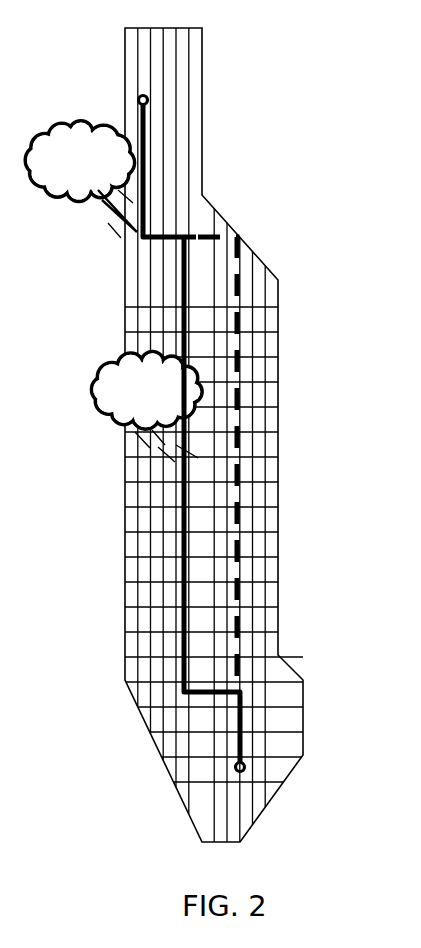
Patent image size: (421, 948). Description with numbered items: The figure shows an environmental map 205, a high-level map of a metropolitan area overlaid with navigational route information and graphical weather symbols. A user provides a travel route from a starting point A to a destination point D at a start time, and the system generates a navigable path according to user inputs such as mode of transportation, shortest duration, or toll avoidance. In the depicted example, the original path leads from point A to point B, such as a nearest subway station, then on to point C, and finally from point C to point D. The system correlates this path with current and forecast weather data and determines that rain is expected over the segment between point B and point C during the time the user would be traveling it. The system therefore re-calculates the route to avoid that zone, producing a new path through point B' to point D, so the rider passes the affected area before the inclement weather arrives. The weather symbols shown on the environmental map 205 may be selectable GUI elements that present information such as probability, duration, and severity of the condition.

The environmental map 205 is at (279, 142).
The point A is at (148, 167).
The point B is at (81, 200).
The point B' is at (250, 451).
The point C is at (147, 524).
The point D is at (256, 507).